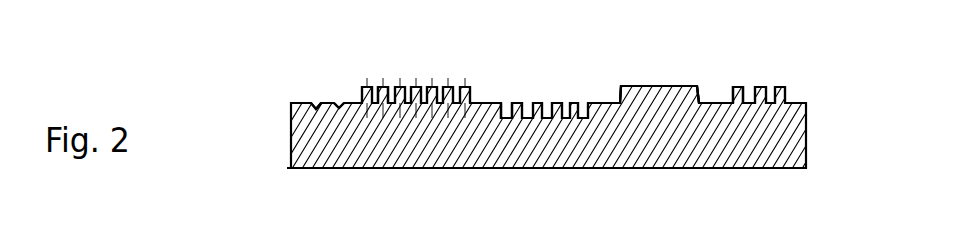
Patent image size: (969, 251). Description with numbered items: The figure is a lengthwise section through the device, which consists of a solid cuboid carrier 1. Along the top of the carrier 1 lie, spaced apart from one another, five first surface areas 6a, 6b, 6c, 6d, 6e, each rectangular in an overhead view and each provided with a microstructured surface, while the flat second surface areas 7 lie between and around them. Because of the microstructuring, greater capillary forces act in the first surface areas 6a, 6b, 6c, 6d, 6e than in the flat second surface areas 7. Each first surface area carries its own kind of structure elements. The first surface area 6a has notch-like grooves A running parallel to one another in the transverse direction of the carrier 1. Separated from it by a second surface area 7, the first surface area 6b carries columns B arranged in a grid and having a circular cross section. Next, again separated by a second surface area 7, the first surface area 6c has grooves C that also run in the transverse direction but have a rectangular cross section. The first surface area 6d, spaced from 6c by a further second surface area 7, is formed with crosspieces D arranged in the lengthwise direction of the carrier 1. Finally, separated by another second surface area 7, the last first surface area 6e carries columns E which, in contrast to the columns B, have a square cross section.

The carrier 1 is at (812, 131).
The first surface area 6a is at (317, 101).
The first surface area 6b is at (396, 88).
The first surface area 6c is at (526, 106).
The first surface area 6d is at (645, 86).
The first surface area 6e is at (759, 88).
The second surface areas 7 is at (352, 101).
The notch-like grooves A is at (336, 110).
The columns B is at (382, 108).
The grooves C is at (510, 121).
The crosspieces D is at (665, 89).
The columns E is at (740, 106).